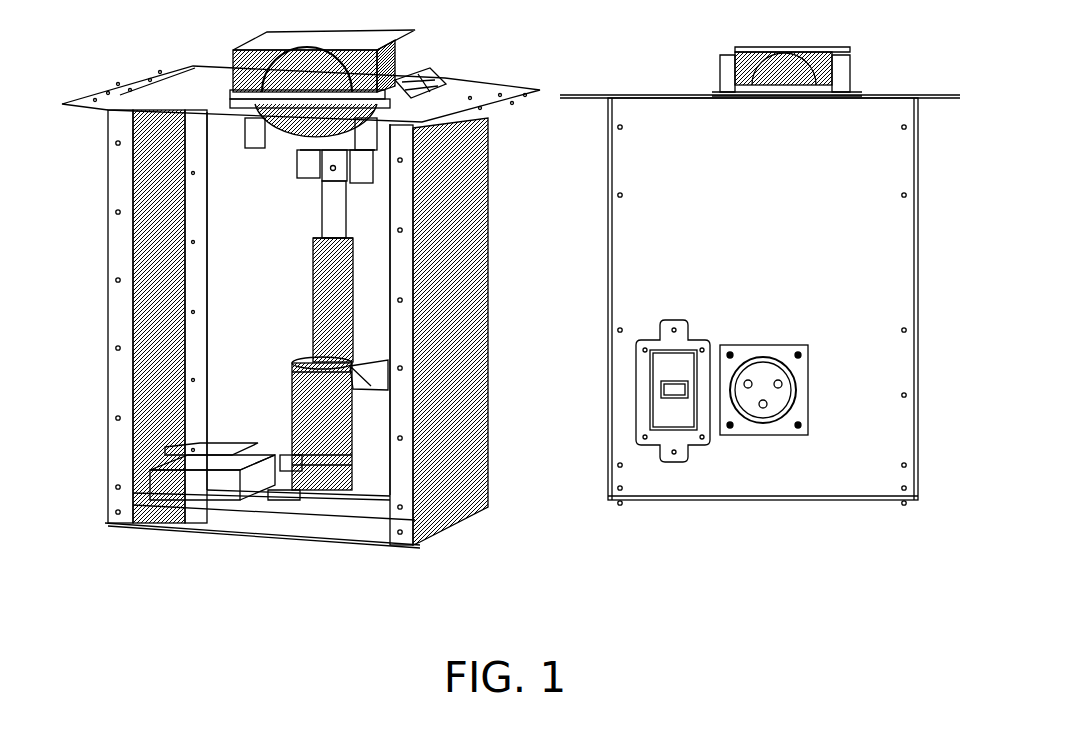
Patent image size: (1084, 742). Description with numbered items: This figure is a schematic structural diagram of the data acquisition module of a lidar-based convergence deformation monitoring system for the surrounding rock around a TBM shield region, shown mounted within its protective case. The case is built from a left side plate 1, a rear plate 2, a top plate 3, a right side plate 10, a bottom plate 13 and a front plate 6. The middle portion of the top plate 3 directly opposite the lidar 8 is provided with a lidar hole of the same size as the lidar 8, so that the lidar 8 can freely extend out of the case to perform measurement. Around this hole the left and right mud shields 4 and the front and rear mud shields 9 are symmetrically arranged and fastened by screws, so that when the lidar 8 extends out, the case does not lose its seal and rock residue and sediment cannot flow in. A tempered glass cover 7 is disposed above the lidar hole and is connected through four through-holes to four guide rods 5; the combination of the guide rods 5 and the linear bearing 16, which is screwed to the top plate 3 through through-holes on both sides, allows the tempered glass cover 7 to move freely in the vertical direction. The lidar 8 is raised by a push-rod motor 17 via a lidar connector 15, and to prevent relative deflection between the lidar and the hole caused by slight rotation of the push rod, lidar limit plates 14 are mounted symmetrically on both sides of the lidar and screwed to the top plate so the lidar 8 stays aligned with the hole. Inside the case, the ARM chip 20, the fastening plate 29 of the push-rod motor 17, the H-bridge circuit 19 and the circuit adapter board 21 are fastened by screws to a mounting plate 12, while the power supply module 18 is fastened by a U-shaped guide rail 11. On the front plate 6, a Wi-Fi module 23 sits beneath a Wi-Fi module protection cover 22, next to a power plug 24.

The left side plate 1 is at (120, 265).
The rear plate 2 is at (215, 300).
The top plate 3 is at (163, 100).
The left and right mud shields 4 is at (397, 92).
The guide rod 5 is at (243, 85).
The front plate 6 is at (880, 222).
The tempered glass cover 7 is at (357, 50).
The lidar 8 is at (300, 75).
The front and rear mud shields 9 is at (237, 106).
The right side plate 10 is at (452, 252).
The U-shaped guide rail 11 is at (352, 491).
The mounting plate 12 is at (340, 523).
The bottom plate 13 is at (375, 542).
The lidar limit plate 14 is at (278, 148).
The lidar connector 15 is at (326, 180).
The linear bearing 16 is at (250, 122).
The push-rod motor 17 is at (330, 310).
The power supply module 18 is at (370, 384).
The H-bridge circuit 19 is at (282, 468).
The ARM chip 20 is at (200, 452).
The circuit adapter board 21 is at (177, 492).
The Wi-Fi module protection cover 22 is at (640, 415).
The Wi-Fi module 23 is at (673, 388).
The power plug 24 is at (798, 358).
The fastening plate 29 is at (283, 497).